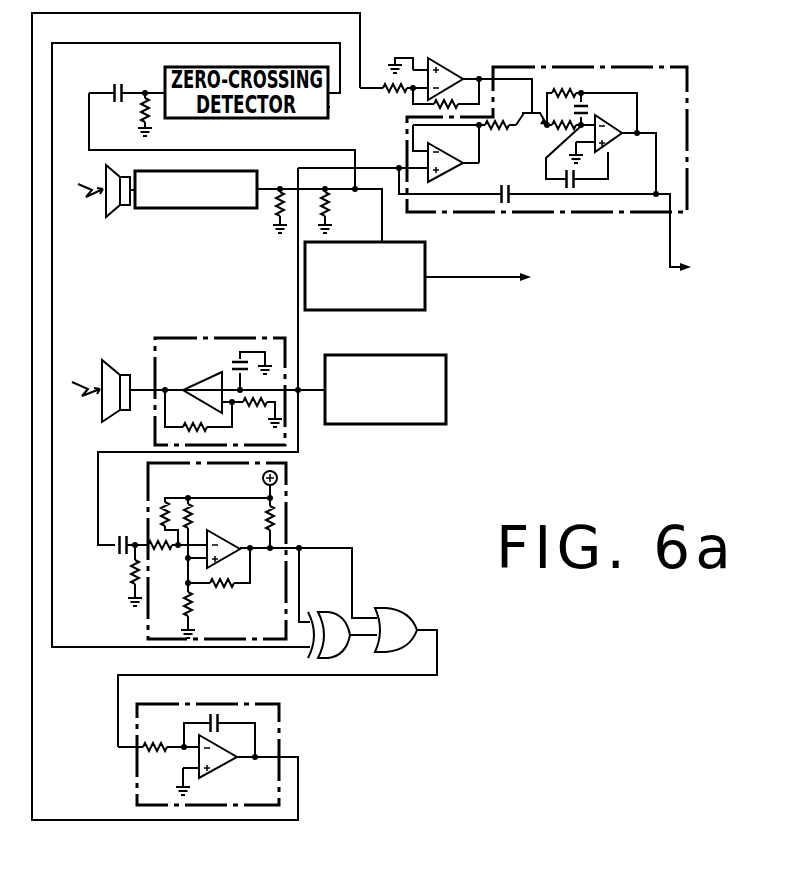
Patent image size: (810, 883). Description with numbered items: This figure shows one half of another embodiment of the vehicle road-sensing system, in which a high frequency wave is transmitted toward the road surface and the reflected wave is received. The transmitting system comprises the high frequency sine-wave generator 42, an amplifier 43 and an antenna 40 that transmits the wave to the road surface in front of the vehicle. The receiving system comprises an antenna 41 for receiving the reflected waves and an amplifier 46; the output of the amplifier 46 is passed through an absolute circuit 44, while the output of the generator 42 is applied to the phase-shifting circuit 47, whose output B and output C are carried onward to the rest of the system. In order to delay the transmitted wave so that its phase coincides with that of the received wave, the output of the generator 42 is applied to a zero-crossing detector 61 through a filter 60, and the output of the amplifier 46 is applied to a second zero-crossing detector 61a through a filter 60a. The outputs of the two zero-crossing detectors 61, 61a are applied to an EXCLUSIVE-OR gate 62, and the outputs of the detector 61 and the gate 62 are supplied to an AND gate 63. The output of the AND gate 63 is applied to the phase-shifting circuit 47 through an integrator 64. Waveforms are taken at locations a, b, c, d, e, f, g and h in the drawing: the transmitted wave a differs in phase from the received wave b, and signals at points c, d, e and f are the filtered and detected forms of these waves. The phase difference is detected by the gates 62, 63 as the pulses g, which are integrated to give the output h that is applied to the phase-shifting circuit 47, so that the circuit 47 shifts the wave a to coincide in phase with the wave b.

The antenna 40 is at (115, 358).
The antenna 41 is at (115, 218).
The high frequency sine-wave generator 42 is at (390, 424).
The amplifier 43 is at (198, 338).
The absolute circuit 44 is at (425, 250).
The amplifier 46 is at (196, 208).
The phase-shifting circuit 47 is at (610, 67).
The filter 60 is at (118, 557).
The filter 60a is at (112, 84).
The zero-crossing detector 61 is at (286, 507).
The zero-crossing detector 61a is at (330, 107).
The EXCLUSIVE-OR gate 62 is at (322, 612).
The AND gate 63 is at (405, 609).
The integrator 64 is at (279, 718).
The transmitted wave a is at (98, 508).
The received wave b is at (355, 150).
The waveform location c is at (143, 536).
The waveform location d is at (300, 568).
The waveform location e is at (148, 92).
The waveform location f is at (313, 43).
The pulses g is at (400, 677).
The integrated output h is at (228, 822).
The output B is at (487, 279).
The output C is at (683, 237).